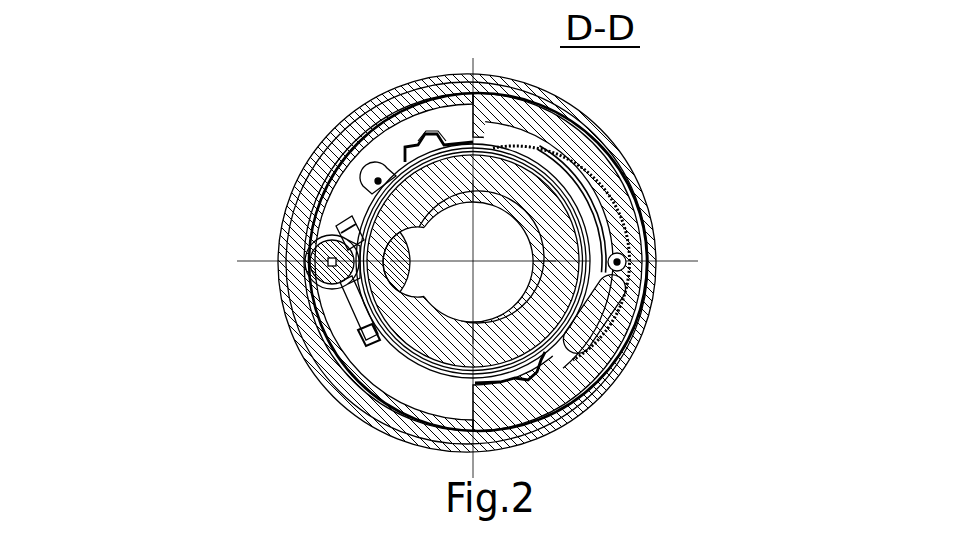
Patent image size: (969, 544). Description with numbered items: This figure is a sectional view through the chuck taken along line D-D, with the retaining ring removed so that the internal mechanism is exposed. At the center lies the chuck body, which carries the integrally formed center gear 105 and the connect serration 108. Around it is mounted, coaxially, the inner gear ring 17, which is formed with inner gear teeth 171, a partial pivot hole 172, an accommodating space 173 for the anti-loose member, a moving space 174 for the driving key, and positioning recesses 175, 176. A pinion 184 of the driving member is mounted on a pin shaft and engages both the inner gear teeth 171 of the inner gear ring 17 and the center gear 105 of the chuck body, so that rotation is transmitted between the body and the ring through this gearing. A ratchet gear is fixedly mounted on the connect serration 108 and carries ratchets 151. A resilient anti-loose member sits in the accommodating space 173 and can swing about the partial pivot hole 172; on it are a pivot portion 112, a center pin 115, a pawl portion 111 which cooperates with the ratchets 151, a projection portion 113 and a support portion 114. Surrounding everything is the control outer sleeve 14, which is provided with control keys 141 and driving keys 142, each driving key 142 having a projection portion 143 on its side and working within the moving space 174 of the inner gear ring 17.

The control outer sleeve 14 is at (452, 77).
The inner gear ring 17 is at (618, 204).
The center gear 105 is at (340, 272).
The connect serration 108 is at (542, 177).
The pawl portion 111 is at (352, 240).
The pivot portion 112 is at (617, 262).
The projection portion 113 is at (357, 314).
The support portion 114 is at (370, 338).
The center pin 115 is at (641, 314).
The control key 141 is at (633, 352).
The driving key 142 is at (433, 142).
The projection portion 143 is at (405, 150).
The ratchet 151 is at (548, 338).
The inner gear teeth 171 is at (340, 225).
The partial pivot hole 172 is at (627, 250).
The accommodating space for anti-loose member 173 is at (588, 199).
The moving space for driving key 174 is at (377, 160).
The positioning recess 175 is at (393, 168).
The positioning recess 176 is at (425, 138).
The pinion 184 is at (322, 256).